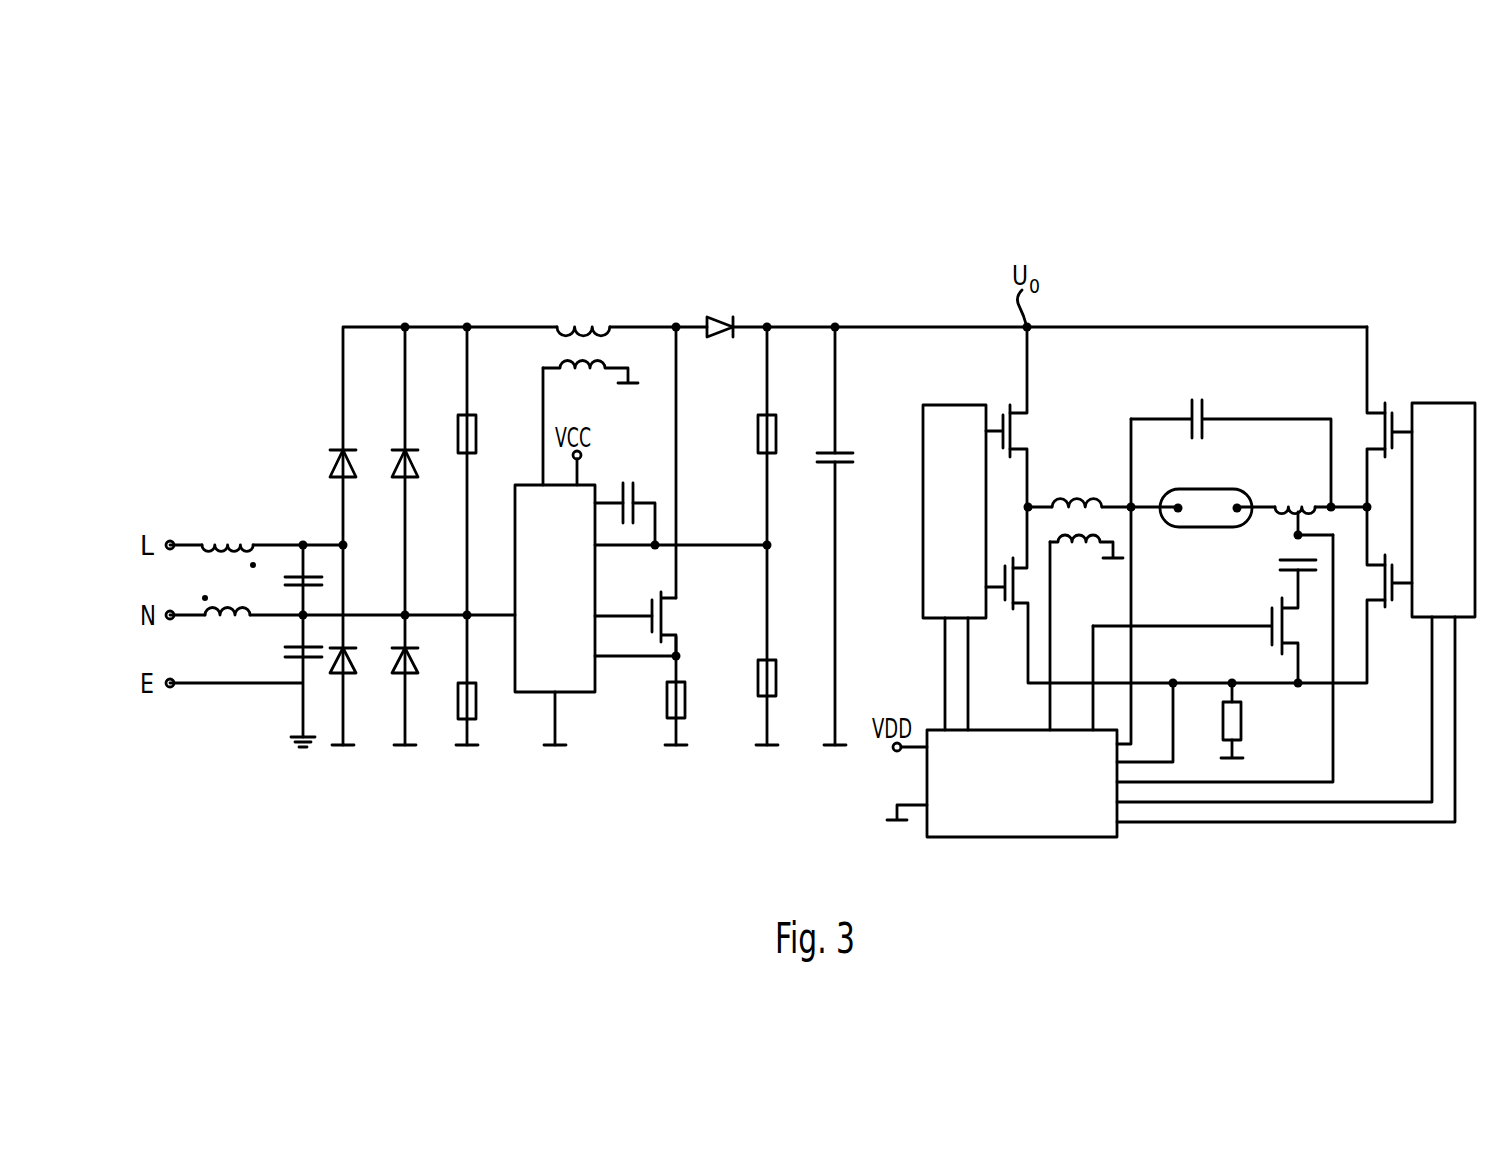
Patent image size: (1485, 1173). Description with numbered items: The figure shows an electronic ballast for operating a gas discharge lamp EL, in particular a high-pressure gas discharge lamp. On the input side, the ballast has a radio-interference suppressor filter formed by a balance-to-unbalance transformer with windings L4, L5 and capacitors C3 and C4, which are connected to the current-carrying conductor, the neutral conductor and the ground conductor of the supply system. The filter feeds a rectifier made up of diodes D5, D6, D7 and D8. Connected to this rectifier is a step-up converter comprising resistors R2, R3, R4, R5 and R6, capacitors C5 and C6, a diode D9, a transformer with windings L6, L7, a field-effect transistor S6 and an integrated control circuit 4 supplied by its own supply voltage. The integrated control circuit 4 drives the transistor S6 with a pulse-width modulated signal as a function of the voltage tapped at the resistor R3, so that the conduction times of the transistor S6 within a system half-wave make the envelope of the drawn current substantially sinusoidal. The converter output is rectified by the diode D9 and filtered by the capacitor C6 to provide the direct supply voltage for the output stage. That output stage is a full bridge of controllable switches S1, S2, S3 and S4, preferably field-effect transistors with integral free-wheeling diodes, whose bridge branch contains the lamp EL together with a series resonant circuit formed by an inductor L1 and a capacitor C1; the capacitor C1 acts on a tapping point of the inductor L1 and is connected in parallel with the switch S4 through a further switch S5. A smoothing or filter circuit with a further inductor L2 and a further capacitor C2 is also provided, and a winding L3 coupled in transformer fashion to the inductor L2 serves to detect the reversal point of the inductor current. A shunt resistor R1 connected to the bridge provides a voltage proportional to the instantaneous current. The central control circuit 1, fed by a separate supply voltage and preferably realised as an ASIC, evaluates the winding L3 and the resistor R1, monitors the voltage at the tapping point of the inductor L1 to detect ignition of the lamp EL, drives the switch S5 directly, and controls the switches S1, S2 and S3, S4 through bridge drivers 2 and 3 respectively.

The central control circuit 1 is at (1033, 840).
The bridge driver 2 is at (926, 523).
The bridge driver 3 is at (1443, 402).
The integrated control circuit 4 is at (589, 692).
The inductor L1 is at (1286, 498).
The further inductor L2 is at (1078, 498).
The winding L3 is at (1077, 556).
The balance-to-unbalance transformer winding L4 is at (226, 540).
The balance-to-unbalance transformer winding L5 is at (232, 625).
The transformer winding L6 is at (587, 322).
The transformer winding L7 is at (589, 377).
The capacitor C1 is at (1280, 563).
The further capacitor C2 is at (1193, 400).
The capacitor C3 is at (325, 581).
The capacitor C4 is at (281, 650).
The capacitor C5 is at (622, 484).
The capacitor C6 is at (824, 470).
The diode D5 is at (336, 470).
The diode D6 is at (404, 480).
The diode D7 is at (350, 674).
The diode D8 is at (412, 674).
The diode D9 is at (719, 319).
The resistor R1 is at (1245, 717).
The resistor R2 is at (478, 432).
The resistor R3 is at (479, 700).
The resistor R4 is at (668, 708).
The resistor R5 is at (757, 438).
The resistor R6 is at (757, 680).
The controllable switch S1 is at (1006, 412).
The controllable switch S2 is at (1014, 620).
The controllable switch S3 is at (1391, 410).
The controllable switch S4 is at (1393, 610).
The further controllable switch S5 is at (1270, 638).
The field-effect transistor S6 is at (674, 620).
The gas discharge lamp EL is at (1190, 536).